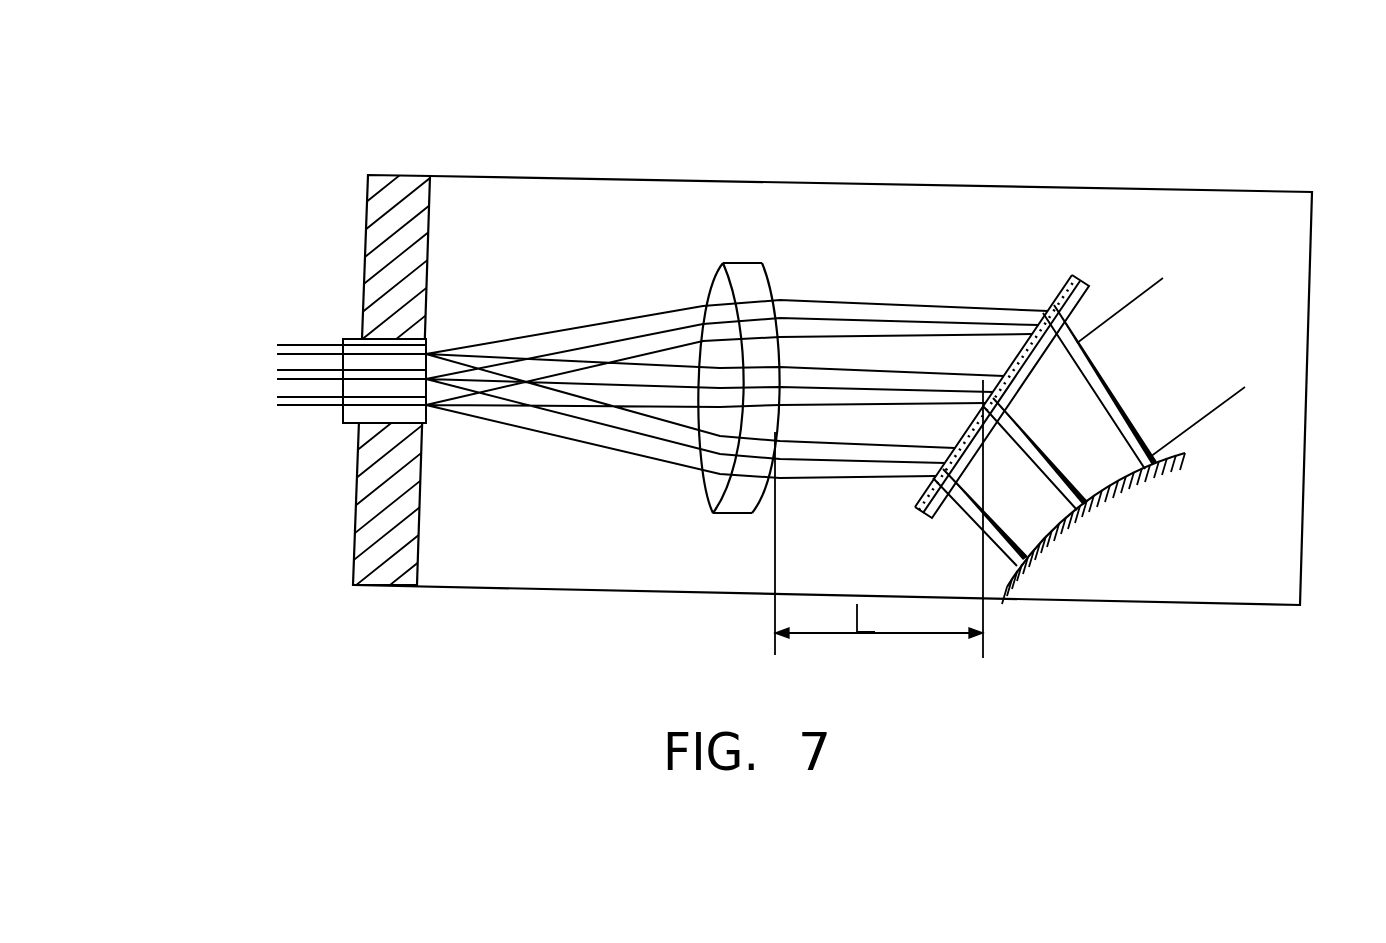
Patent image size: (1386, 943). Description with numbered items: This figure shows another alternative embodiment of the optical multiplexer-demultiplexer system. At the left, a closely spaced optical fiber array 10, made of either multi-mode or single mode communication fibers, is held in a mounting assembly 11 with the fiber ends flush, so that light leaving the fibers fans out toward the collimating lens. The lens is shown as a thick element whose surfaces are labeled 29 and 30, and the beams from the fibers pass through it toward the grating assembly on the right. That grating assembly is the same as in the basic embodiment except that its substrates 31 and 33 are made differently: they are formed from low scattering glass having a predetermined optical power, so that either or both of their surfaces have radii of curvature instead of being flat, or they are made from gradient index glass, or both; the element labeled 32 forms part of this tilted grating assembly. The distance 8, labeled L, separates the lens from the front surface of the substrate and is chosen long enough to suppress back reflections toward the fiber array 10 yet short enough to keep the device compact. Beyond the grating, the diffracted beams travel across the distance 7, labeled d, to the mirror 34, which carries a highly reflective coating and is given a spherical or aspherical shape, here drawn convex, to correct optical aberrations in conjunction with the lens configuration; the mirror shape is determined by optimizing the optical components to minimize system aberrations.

The distance 7 is at (1206, 332).
The distance 8 is at (882, 635).
The optical fiber array 10 is at (302, 340).
The mounting assembly 11 is at (348, 330).
The collimating lens 29 is at (710, 276).
The lens exit surface 30 is at (773, 263).
The substrate 31 is at (1063, 287).
The grating substrate 32 is at (1084, 285).
The substrate 33 is at (1104, 290).
The mirror 34 is at (1132, 494).